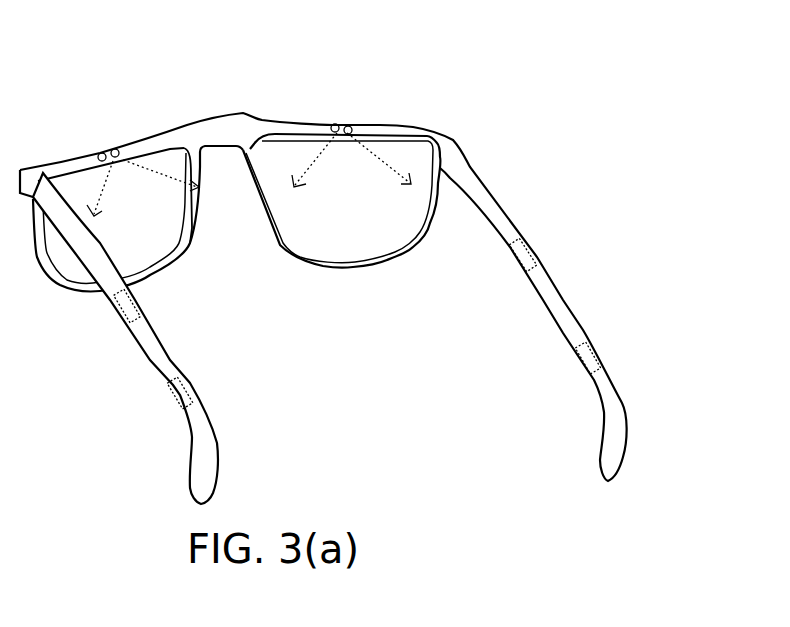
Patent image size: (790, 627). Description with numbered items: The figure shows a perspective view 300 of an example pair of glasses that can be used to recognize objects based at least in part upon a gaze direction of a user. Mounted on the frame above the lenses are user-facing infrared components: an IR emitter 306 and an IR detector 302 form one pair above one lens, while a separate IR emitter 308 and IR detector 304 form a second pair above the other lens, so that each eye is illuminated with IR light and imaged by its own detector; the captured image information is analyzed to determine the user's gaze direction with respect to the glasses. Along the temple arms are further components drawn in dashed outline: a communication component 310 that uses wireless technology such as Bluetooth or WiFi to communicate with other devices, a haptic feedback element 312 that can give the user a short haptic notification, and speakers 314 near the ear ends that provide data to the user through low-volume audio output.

The perspective view of glasses 300 is at (602, 87).
The IR detector 302 is at (103, 148).
The IR detector 304 is at (334, 124).
The IR emitter 306 is at (98, 156).
The IR emitter 308 is at (348, 126).
The communication component 310 is at (121, 304).
The haptic feedback element 312 is at (530, 249).
The speaker 314 is at (178, 393).